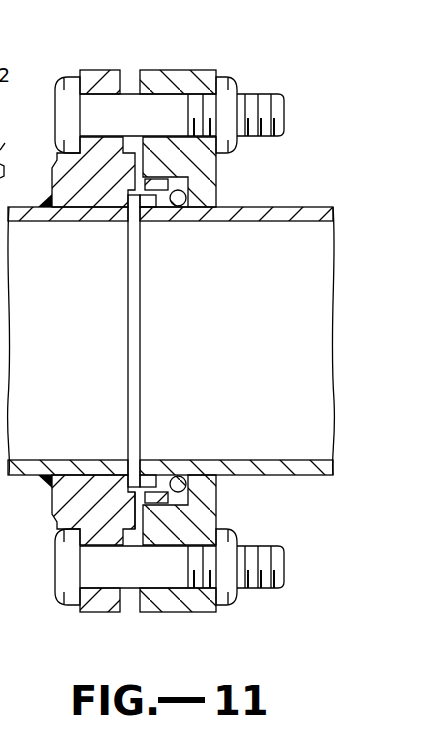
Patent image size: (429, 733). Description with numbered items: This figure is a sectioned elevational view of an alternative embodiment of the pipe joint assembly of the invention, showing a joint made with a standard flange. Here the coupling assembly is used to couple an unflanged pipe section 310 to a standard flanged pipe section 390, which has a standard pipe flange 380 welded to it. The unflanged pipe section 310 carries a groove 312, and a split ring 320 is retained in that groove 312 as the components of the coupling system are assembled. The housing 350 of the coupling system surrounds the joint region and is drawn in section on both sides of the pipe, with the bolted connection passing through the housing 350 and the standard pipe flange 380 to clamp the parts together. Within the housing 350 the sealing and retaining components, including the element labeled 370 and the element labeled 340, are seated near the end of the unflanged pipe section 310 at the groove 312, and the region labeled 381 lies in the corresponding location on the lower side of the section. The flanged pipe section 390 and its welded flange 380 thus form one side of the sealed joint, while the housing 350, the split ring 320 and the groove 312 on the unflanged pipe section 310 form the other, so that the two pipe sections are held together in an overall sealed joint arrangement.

The pipe section 310 is at (295, 203).
The groove 312 is at (180, 212).
The split ring 320 is at (236, 340).
The retainer clip 340 is at (153, 208).
The housing 350 is at (226, 173).
The seal 370 is at (158, 168).
The standard pipe flange 380 is at (46, 520).
The groove 381 is at (133, 522).
The flanged pipe section 390 is at (27, 196).